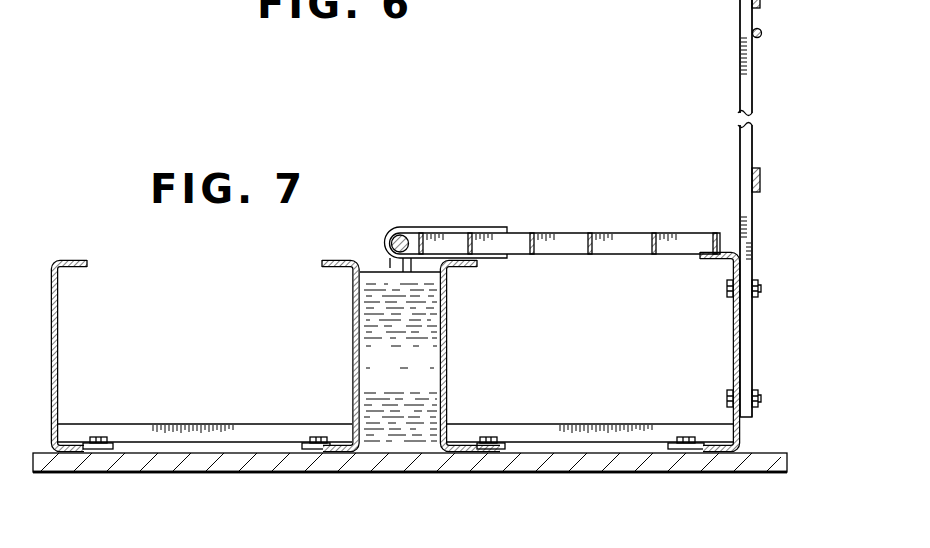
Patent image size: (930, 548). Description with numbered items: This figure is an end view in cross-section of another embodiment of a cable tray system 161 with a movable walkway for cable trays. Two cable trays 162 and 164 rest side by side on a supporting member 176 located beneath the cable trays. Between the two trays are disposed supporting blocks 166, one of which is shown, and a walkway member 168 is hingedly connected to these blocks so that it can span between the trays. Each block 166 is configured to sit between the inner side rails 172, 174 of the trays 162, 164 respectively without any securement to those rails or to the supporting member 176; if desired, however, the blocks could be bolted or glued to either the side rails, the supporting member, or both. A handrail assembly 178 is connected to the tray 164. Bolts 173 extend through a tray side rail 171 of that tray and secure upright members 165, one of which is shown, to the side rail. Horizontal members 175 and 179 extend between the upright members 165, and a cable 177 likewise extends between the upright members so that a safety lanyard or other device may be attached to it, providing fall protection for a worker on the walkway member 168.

The cable tray system 161 is at (236, 473).
The cable tray 162 is at (58, 340).
The cable tray 164 is at (737, 368).
The upright member 165 is at (738, 166).
The supporting block 166 is at (376, 392).
The walkway member 168 is at (581, 210).
The tray side rail 171 is at (733, 326).
The inner side rail 172 is at (352, 327).
The bolts 173 is at (797, 396).
The inner side rail 174 is at (446, 342).
The horizontal member 175 is at (762, 180).
The supporting member 176 is at (766, 465).
The cable 177 is at (762, 33).
The handrail assembly 178 is at (739, 90).
The horizontal member 179 is at (762, 3).